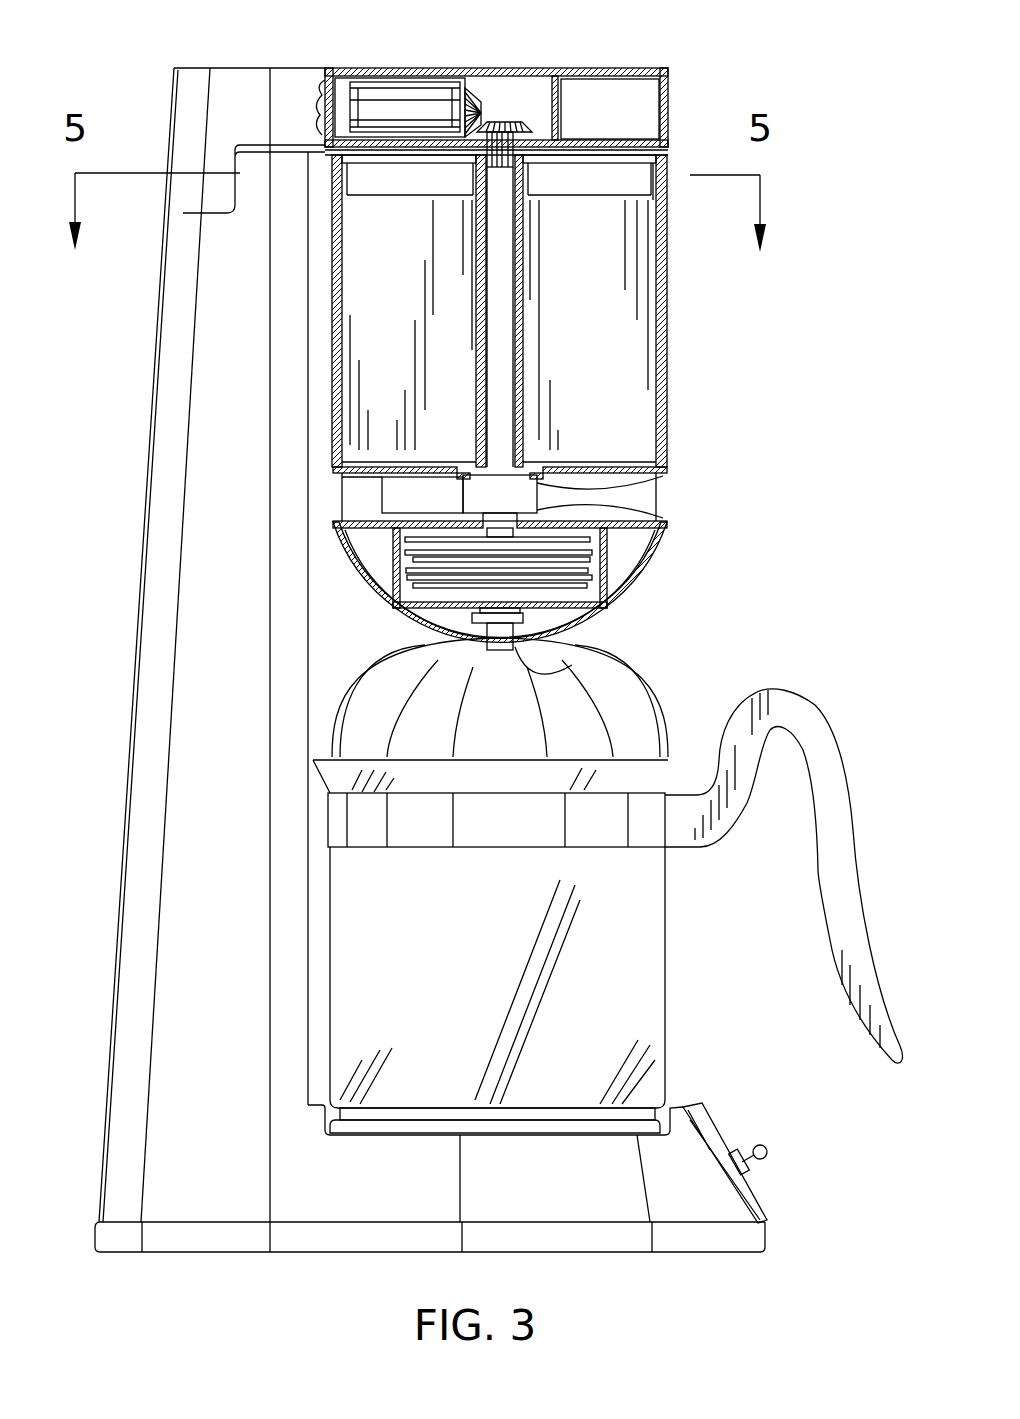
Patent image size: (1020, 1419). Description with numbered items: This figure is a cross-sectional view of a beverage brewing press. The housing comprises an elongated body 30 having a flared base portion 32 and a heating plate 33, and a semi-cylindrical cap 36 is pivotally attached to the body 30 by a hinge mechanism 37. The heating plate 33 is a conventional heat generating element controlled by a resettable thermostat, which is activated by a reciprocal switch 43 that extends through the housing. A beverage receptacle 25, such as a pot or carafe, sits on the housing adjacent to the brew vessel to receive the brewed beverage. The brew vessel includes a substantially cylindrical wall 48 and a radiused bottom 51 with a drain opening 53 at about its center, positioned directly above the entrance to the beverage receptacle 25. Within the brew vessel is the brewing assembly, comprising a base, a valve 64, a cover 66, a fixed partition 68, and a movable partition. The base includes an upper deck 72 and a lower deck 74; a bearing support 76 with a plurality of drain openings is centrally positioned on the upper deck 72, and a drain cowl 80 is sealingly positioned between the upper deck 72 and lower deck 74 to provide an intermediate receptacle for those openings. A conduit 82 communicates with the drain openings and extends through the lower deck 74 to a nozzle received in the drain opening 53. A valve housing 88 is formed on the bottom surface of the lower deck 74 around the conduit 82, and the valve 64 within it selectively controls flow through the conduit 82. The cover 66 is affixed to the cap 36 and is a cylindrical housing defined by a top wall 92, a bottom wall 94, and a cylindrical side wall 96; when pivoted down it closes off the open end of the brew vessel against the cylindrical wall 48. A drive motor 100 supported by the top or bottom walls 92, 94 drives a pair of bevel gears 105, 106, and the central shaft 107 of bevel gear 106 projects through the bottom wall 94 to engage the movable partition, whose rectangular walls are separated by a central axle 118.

The beverage receptacle 25 is at (828, 689).
The elongated body 30 is at (150, 858).
The flared base portion 32 is at (112, 1242).
The heating plate 33 is at (672, 1108).
The semi-cylindrical cap 36 is at (246, 70).
The hinge mechanism 37 is at (200, 213).
The reciprocal switch 43 is at (768, 1150).
The cylindrical wall 48 is at (668, 340).
The radiused bottom 51 is at (622, 570).
The drain opening 53 is at (565, 668).
The valve 64 is at (606, 556).
The cover 66 is at (356, 62).
The fixed partition 68 is at (378, 195).
The upper deck 72 is at (667, 478).
The lower deck 74 is at (355, 522).
The bearing support 76 is at (538, 496).
The drain cowl 80 is at (465, 492).
The conduit 82 is at (615, 517).
The valve housing 88 is at (394, 565).
The top wall 92 is at (642, 74).
The bottom wall 94 is at (640, 141).
The cylindrical side wall 96 is at (668, 100).
The drive motor 100 is at (402, 100).
The bevel gear 105 is at (491, 105).
The bevel gear 106 is at (513, 116).
The central shaft 107 is at (502, 170).
The central axle 118 is at (657, 222).